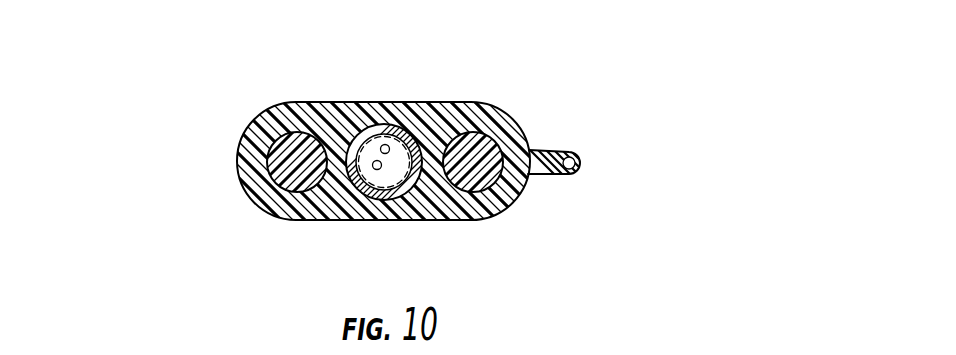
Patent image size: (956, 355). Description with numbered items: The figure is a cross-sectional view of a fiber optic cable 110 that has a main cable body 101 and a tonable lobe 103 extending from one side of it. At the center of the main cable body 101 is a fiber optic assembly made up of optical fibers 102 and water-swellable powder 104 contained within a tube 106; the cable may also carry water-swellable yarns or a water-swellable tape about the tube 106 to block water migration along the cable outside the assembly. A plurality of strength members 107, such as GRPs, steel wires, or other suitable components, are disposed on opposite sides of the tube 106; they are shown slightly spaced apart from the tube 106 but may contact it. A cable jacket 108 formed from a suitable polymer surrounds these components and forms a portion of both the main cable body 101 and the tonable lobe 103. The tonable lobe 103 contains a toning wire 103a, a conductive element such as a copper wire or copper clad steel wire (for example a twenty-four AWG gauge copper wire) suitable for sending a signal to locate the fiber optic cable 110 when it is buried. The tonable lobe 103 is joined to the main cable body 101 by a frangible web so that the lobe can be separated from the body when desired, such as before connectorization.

The fiber optic cable 110 is at (167, 115).
The main cable body 101 is at (525, 228).
The optical fibers 102 is at (381, 163).
The tonable lobe 103 is at (586, 183).
The toning wire 103a is at (576, 160).
The water-swellable powder 104 is at (353, 138).
The tube 106 is at (395, 200).
The strength members 107 is at (283, 178).
The cable jacket 108 is at (242, 181).